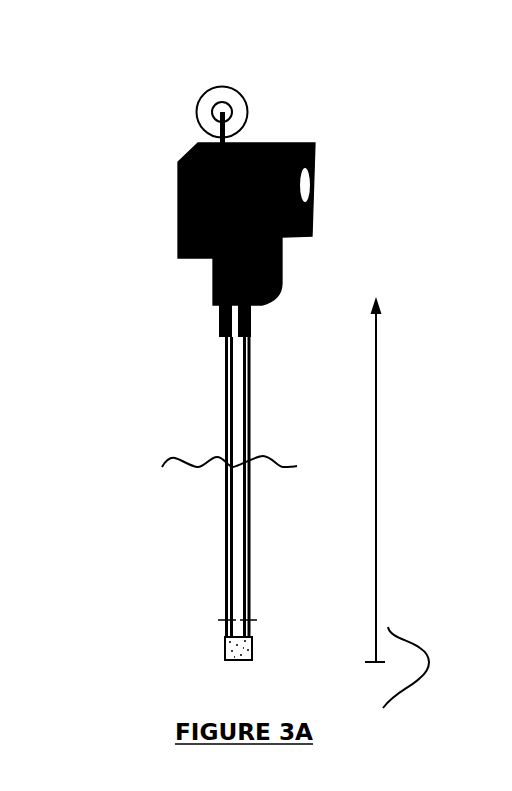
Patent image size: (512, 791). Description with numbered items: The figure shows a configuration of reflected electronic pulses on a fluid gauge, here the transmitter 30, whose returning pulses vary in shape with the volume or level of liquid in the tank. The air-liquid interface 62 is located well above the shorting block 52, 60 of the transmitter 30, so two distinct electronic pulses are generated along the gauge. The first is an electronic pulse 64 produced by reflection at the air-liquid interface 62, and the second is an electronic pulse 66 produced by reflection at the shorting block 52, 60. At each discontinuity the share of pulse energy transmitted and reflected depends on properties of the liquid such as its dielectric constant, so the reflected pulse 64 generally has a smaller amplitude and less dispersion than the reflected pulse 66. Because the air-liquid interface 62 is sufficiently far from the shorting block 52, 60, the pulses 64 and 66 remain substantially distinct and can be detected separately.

The transmitter 30 is at (99, 75).
The shorting block 52 is at (225, 643).
The shorting block 60 is at (225, 643).
The air-liquid interface 62 is at (185, 452).
The electronic pulse 64 is at (384, 488).
The electronic pulse 66 is at (422, 642).